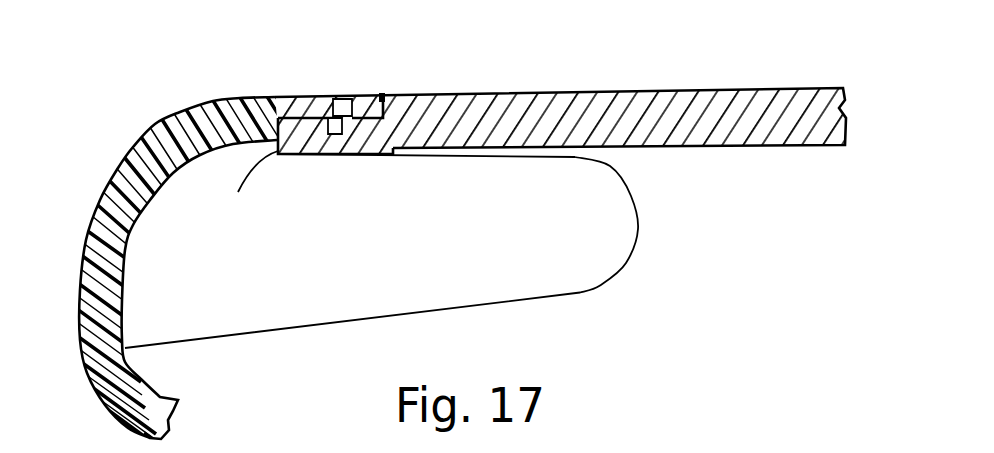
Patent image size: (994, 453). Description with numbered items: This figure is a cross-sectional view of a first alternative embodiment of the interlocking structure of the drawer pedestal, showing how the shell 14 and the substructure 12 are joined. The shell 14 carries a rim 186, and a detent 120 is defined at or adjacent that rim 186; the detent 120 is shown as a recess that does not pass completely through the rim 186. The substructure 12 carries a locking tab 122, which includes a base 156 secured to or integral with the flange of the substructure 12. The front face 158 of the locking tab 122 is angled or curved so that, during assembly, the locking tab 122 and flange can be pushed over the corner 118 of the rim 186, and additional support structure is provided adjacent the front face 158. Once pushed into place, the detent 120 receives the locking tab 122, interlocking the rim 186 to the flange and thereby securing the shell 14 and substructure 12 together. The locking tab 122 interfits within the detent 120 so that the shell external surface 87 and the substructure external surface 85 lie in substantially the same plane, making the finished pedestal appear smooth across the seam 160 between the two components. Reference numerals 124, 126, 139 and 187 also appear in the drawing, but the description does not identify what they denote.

The substructure 12 is at (154, 125).
The shell 14 is at (581, 93).
The substructure external surface 85 is at (112, 165).
The shell external surface 87 is at (701, 88).
The corner 118 is at (292, 153).
The detent 120 is at (333, 150).
The locking tab 122 is at (343, 124).
The foam core 124 is at (610, 237).
The panel lower skin 126 is at (533, 157).
The frame 139 is at (214, 100).
The base 156 is at (333, 150).
The front face 158 is at (352, 128).
The seam 160 is at (382, 94).
The rim 186 is at (345, 162).
The insert block 187 is at (277, 151).